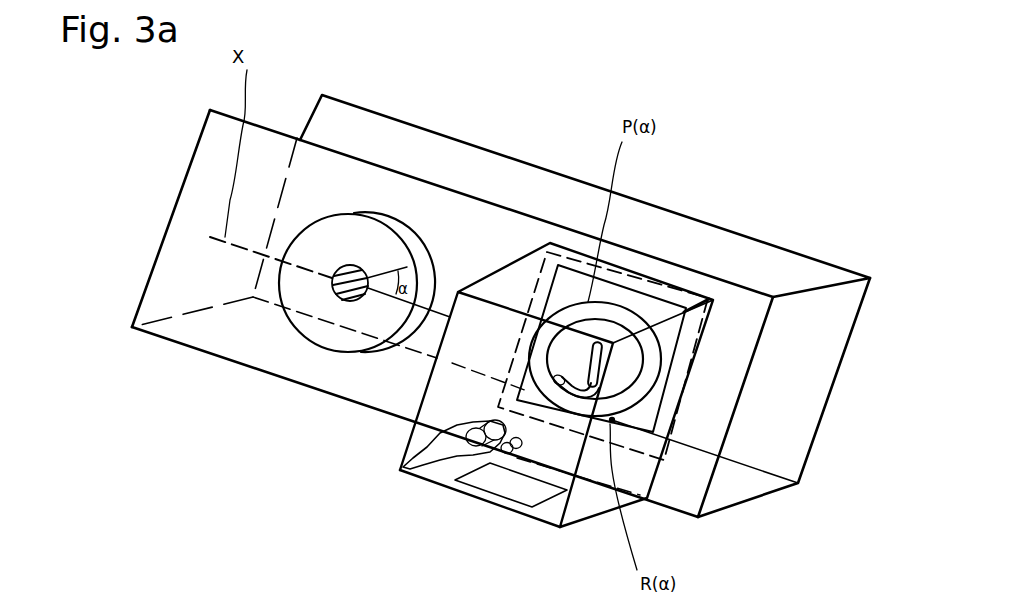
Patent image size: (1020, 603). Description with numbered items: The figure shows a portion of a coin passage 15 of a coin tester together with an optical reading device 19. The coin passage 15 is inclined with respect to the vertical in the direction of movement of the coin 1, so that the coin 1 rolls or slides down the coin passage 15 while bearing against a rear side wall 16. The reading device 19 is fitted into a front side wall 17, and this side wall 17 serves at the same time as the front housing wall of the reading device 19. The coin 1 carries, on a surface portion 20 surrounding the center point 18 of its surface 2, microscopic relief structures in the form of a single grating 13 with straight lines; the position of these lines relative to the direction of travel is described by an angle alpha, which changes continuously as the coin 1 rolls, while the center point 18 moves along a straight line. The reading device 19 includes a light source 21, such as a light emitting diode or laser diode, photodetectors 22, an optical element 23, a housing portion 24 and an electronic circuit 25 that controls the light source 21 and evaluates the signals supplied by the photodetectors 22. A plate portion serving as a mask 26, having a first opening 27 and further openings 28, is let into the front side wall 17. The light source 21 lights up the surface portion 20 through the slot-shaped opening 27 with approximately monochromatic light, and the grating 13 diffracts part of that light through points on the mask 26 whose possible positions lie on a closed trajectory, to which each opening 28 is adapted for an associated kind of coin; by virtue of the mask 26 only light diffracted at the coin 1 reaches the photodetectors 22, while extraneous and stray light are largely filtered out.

The coin 1 is at (317, 222).
The surface 2 is at (345, 223).
The single grating 13 is at (352, 301).
The coin passage 15 is at (226, 288).
The rear side wall 16 is at (342, 120).
The front side wall 17 is at (165, 268).
The center point 18 is at (347, 300).
The optical reading device 19 is at (438, 537).
The surface portion 20 is at (362, 265).
The light source 21 is at (660, 402).
The photodetectors 22 is at (398, 470).
The optical element 23 is at (612, 424).
The housing portion 24 is at (543, 528).
The electronic circuit 25 is at (500, 480).
The mask 26 is at (620, 300).
The first opening 27 is at (642, 308).
The further openings 28 is at (693, 314).